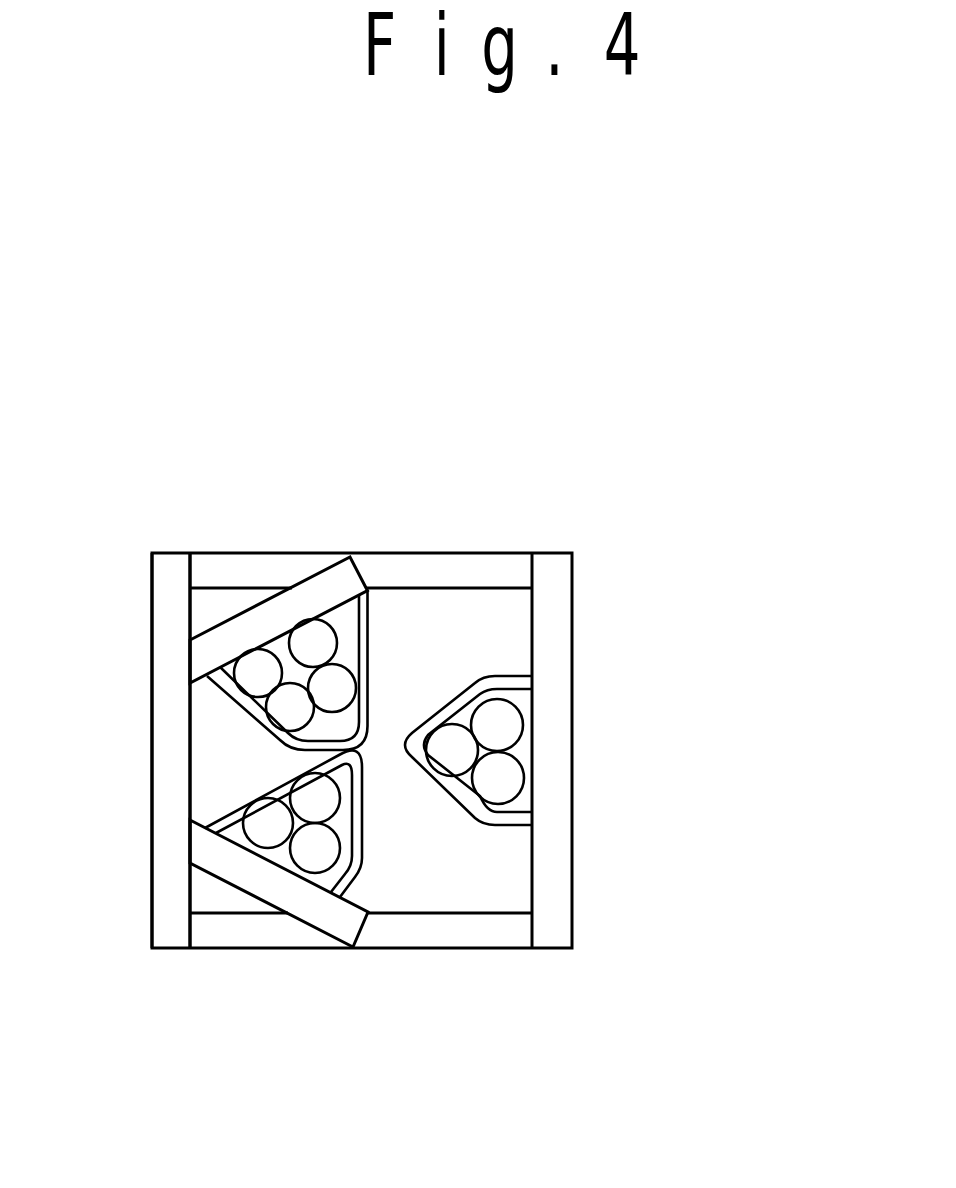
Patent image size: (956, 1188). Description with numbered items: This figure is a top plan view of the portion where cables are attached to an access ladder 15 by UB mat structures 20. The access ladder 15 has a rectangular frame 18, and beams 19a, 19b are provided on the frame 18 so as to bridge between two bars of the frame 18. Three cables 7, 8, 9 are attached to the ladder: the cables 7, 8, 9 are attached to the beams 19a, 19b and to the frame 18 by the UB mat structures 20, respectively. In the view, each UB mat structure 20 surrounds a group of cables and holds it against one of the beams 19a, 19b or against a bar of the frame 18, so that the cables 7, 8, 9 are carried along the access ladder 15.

The access ladder 15 is at (558, 546).
The rectangular frame 18 is at (158, 722).
The beam 19a is at (203, 654).
The beam 19b is at (195, 843).
The cable 7 is at (307, 630).
The cable 8 is at (316, 858).
The cable 9 is at (513, 728).
The UB mat structure 20 is at (510, 680).